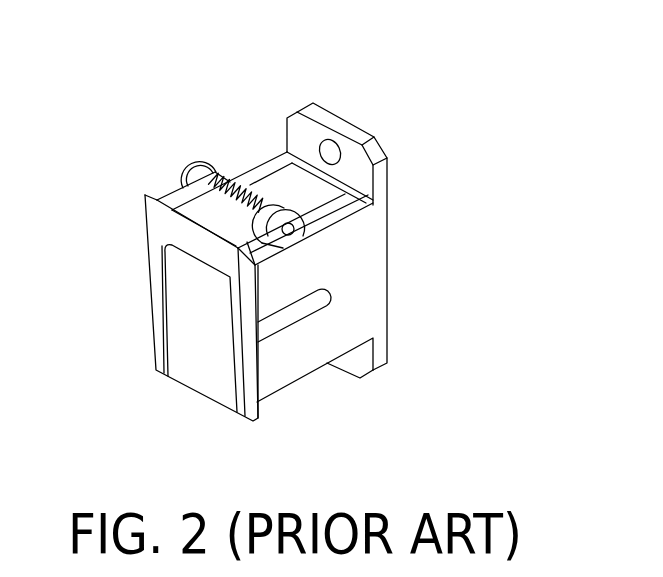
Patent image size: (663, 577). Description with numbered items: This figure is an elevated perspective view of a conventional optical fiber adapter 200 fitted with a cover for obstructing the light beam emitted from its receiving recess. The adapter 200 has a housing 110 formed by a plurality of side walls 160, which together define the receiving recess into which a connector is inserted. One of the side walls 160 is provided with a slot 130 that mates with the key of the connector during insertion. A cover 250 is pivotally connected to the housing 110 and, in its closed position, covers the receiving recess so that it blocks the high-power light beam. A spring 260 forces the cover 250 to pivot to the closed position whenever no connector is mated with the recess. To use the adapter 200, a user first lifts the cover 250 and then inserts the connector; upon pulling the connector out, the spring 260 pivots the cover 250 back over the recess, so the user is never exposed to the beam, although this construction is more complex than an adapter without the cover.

The fiber adapter 200 is at (372, 110).
The housing 110 is at (263, 153).
The spring 260 is at (245, 193).
The cover 250 is at (188, 335).
The slot 130 is at (300, 308).
The side walls 160 is at (277, 370).